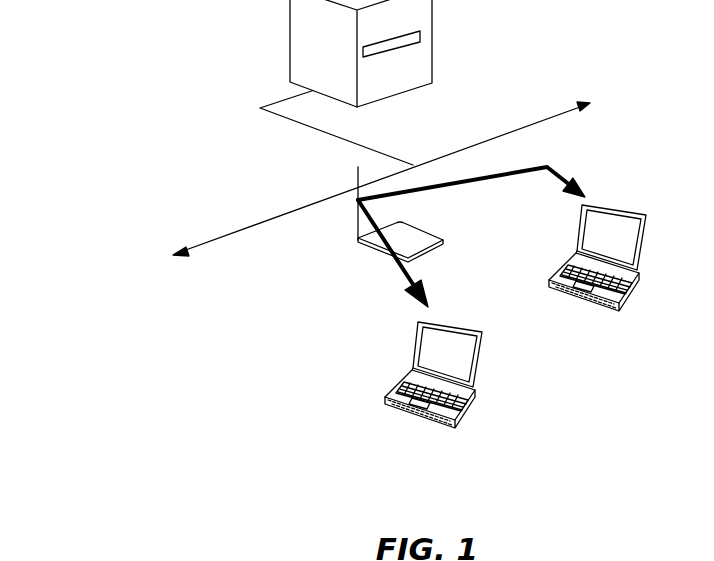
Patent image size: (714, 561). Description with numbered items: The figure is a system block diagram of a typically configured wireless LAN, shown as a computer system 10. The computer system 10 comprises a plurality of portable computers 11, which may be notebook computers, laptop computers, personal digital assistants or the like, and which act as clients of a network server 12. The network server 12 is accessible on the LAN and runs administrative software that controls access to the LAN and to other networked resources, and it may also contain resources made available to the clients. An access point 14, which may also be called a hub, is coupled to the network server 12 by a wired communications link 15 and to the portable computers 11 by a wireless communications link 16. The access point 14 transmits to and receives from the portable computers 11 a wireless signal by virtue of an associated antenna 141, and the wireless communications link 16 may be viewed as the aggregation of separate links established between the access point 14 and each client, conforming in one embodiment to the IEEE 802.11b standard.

The computer system 10 is at (105, 198).
The portable computers 11 is at (420, 417).
The network server 12 is at (290, 28).
The access point 14 is at (380, 252).
The antenna 141 is at (360, 170).
The wired communications link 15 is at (330, 137).
The wireless communications link 16 is at (487, 177).